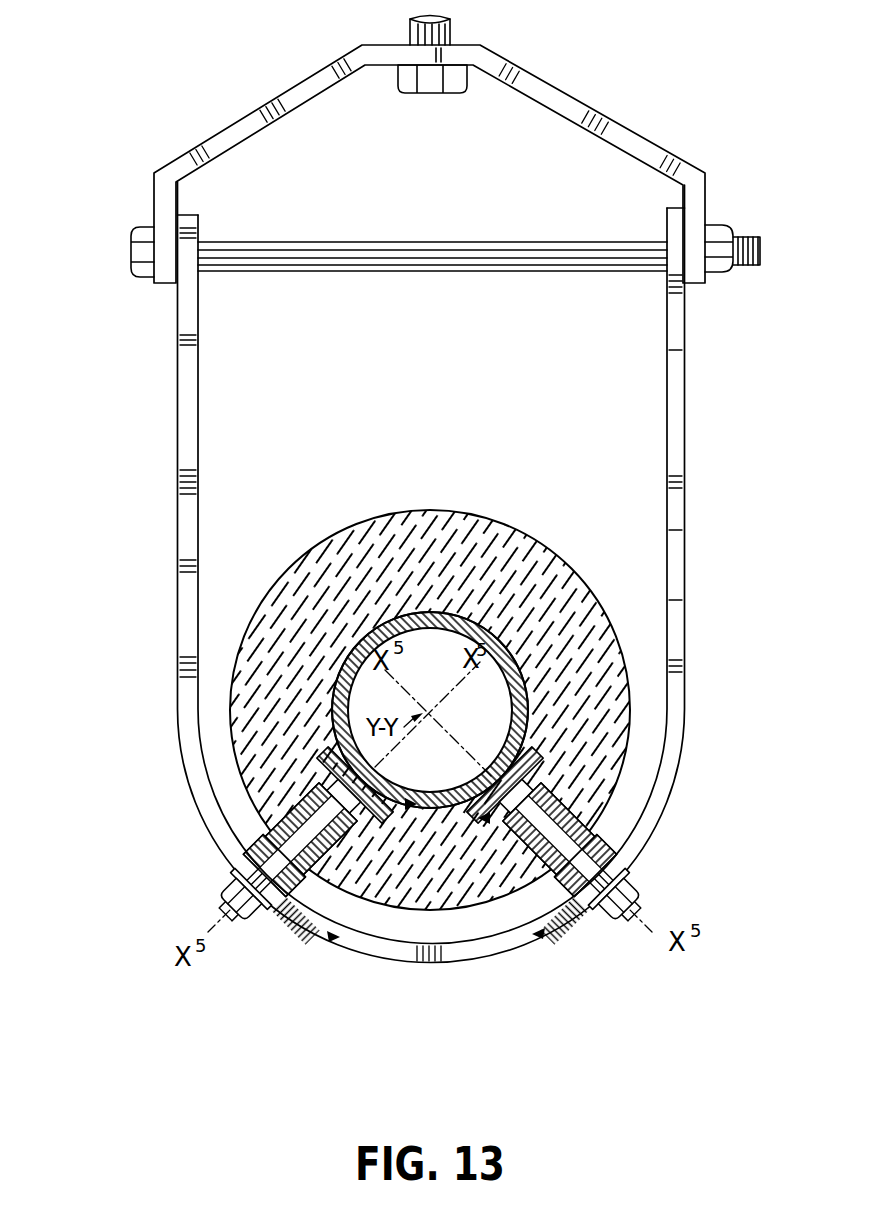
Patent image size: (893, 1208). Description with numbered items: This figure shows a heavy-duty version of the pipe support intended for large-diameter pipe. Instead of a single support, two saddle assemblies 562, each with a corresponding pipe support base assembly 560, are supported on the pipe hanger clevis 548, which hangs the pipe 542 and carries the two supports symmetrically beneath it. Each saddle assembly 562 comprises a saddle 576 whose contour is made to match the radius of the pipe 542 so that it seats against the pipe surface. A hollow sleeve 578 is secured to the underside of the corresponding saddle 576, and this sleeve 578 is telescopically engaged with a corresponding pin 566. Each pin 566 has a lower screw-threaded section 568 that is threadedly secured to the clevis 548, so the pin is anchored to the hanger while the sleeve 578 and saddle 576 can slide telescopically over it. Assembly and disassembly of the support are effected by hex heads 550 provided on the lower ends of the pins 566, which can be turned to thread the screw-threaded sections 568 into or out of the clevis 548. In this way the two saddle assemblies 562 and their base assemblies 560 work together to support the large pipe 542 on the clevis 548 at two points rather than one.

The pipe 542 is at (393, 772).
The pipe hanger clevis 548 is at (672, 495).
The hex head 550 is at (242, 910).
The pipe support base assembly 560 is at (210, 912).
The saddle assembly 562 is at (260, 820).
The pin 566 is at (262, 843).
The lower screw-threaded section 568 is at (234, 877).
The saddle 576 is at (513, 740).
The hollow sleeve 578 is at (370, 918).